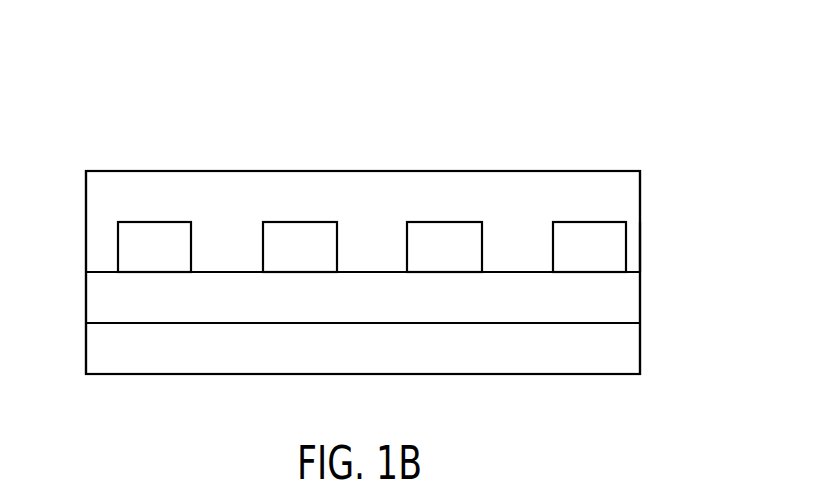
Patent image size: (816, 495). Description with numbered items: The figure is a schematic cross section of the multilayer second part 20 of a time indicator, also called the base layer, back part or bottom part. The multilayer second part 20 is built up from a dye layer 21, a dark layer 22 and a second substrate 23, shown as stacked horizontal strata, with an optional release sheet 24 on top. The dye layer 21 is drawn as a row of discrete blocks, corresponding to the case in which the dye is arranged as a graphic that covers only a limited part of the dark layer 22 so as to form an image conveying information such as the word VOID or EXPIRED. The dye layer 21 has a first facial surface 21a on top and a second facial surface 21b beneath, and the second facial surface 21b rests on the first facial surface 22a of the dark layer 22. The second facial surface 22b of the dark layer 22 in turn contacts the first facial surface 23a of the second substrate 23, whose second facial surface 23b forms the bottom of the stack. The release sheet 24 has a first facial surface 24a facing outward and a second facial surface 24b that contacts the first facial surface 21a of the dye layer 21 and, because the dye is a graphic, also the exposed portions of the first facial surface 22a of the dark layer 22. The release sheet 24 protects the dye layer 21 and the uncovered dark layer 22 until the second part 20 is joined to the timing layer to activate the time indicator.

The multilayer second part 20 is at (588, 88).
The dye layer 21 is at (118, 248).
The first facial surface of dye layer 21a is at (594, 229).
The second facial surface of dye layer 21b is at (599, 268).
The dark layer 22 is at (86, 297).
The first facial surface of dark layer 22a is at (638, 280).
The second facial surface of dark layer 22b is at (590, 317).
The second substrate 23 is at (86, 352).
The first facial surface of second substrate 23a is at (618, 331).
The second facial surface of second substrate 23b is at (585, 372).
The release sheet 24 is at (86, 198).
The first facial surface of release sheet 24a is at (510, 175).
The second facial surface of release sheet 24b is at (632, 268).